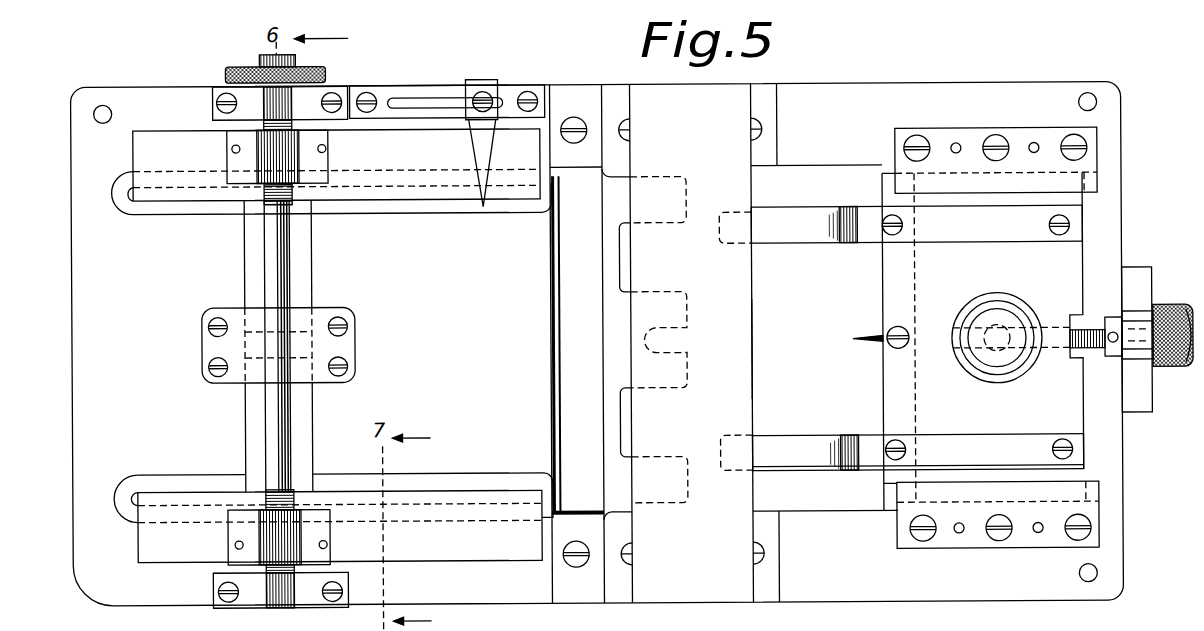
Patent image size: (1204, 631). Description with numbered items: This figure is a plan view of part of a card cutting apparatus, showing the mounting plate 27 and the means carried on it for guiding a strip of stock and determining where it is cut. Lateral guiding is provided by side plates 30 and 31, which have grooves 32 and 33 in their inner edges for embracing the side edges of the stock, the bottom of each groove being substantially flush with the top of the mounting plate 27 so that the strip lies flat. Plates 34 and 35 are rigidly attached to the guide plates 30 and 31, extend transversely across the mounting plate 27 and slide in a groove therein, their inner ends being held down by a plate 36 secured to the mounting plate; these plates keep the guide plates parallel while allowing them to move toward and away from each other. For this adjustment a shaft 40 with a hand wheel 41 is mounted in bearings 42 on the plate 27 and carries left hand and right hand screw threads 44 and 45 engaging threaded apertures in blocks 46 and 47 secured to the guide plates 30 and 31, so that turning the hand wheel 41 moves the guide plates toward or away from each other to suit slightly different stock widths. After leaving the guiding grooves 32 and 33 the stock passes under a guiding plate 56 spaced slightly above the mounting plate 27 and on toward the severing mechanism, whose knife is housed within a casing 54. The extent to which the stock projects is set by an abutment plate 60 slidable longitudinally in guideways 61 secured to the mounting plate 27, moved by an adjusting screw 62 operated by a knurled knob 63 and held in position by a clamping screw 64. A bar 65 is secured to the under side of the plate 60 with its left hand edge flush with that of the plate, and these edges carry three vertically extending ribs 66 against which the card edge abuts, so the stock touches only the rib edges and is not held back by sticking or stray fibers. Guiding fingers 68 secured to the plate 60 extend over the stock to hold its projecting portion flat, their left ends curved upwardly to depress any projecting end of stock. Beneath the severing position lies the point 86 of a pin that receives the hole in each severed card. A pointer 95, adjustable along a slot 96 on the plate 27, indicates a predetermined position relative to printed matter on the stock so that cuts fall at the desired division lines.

The mounting plate 27 is at (76, 345).
The side plate 30 is at (482, 557).
The side plate 31 is at (160, 130).
The groove 32 is at (438, 498).
The groove 33 is at (447, 213).
The plate 34 is at (313, 421).
The plate 35 is at (314, 279).
The plate 36 is at (357, 339).
The shaft 40 is at (292, 243).
The hand wheel 41 is at (325, 68).
The bearings 42 is at (245, 101).
The left hand screw thread 44 is at (296, 490).
The right hand screw thread 45 is at (268, 204).
The block 46 is at (300, 541).
The block 47 is at (320, 162).
The casing 54 is at (754, 345).
The guiding plate 56 is at (665, 343).
The abutment plate 60 is at (883, 263).
The guideways 61 is at (1025, 130).
The adjusting screw 62 is at (1090, 318).
The knurled knob 63 is at (1170, 306).
The clamping screw 64 is at (1006, 313).
The bar 65 is at (920, 412).
The ribs 66 is at (883, 208).
The guiding fingers 68 is at (791, 208).
The point 86 is at (853, 340).
The pointer 95 is at (478, 152).
The slot 96 is at (428, 98).